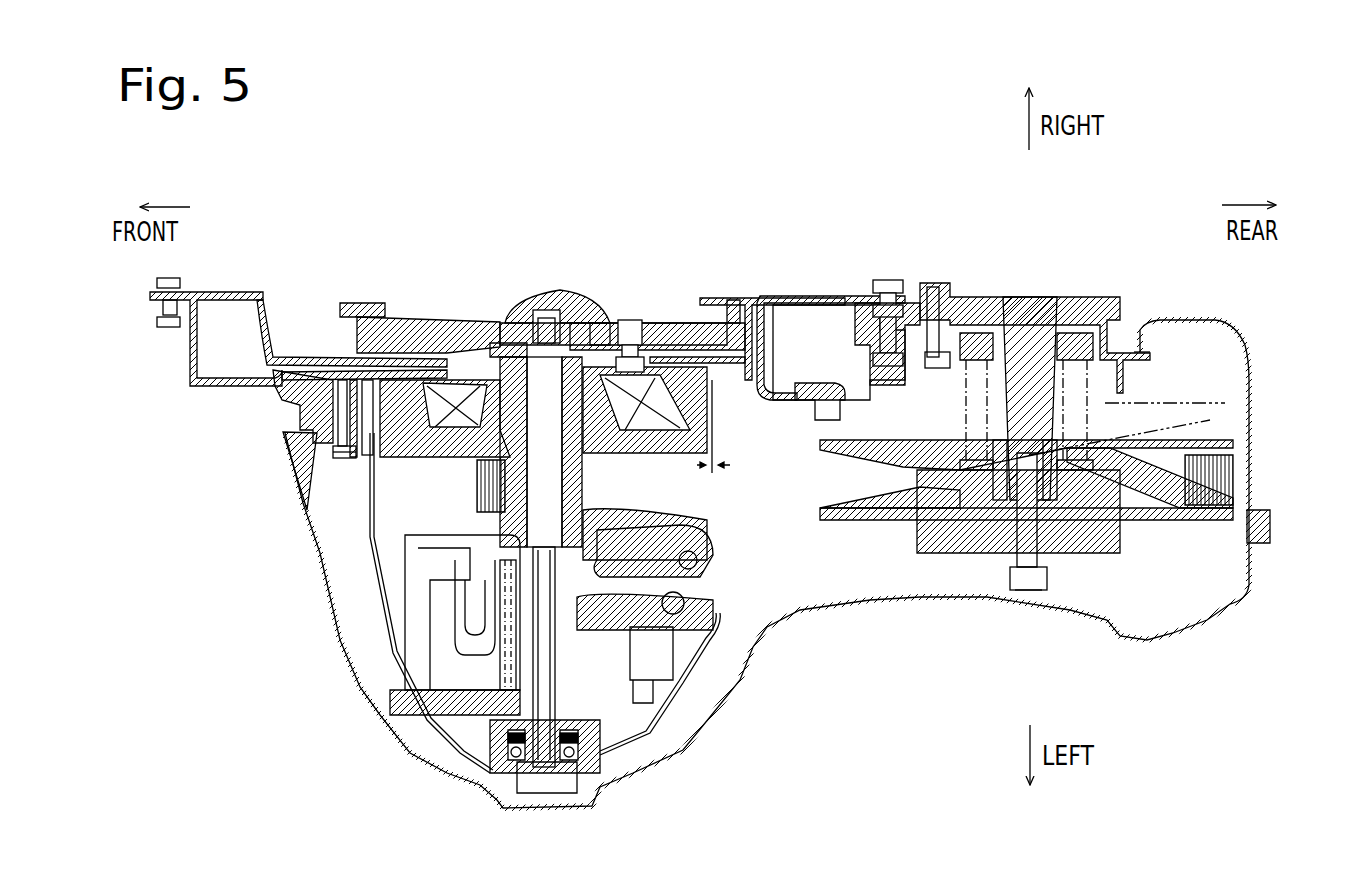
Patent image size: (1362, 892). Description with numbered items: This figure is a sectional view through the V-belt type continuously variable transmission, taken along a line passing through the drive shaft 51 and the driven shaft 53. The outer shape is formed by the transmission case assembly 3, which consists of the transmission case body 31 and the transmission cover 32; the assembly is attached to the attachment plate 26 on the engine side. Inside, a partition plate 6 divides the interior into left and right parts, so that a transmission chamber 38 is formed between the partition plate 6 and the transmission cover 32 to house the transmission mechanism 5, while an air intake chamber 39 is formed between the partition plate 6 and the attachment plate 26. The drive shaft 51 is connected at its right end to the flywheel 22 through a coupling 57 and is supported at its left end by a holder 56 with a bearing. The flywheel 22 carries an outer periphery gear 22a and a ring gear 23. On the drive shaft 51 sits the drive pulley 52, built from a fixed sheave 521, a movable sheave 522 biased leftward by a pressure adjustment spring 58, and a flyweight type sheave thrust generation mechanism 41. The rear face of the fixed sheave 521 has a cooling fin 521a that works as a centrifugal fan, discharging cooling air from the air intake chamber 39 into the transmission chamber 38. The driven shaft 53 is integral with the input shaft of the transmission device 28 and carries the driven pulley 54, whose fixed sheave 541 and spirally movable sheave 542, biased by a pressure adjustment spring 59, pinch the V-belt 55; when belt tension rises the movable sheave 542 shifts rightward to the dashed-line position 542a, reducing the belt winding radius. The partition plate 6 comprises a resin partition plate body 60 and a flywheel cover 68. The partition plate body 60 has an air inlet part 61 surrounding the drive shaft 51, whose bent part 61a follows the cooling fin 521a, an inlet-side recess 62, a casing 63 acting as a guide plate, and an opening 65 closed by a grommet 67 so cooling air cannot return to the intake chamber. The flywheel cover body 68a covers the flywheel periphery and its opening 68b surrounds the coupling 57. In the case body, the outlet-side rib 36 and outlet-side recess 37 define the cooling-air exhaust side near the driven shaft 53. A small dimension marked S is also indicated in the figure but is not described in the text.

The transmission case assembly 3 is at (1075, 476).
The transmission mechanism 5 is at (762, 575).
The partition plate 6 is at (752, 365).
The flywheel 22 is at (655, 325).
The outer periphery gear 22a is at (380, 300).
The ring gear 23 is at (362, 306).
The attachment plate 26 is at (235, 292).
The transmission device 28 is at (1105, 297).
The transmission case body 31 is at (1243, 407).
The transmission cover 32 is at (1265, 520).
The outlet-side rib 36 is at (1143, 340).
The outlet-side recess 37 is at (1180, 322).
The transmission chamber 38 is at (684, 513).
The air intake chamber 39 is at (773, 359).
The sheave thrust generation mechanism 41 is at (448, 612).
The drive shaft 51 is at (500, 722).
The drive pulley 52 is at (232, 547).
The fixed sheave 521 is at (395, 435).
The cooling fin 521a is at (660, 410).
The movable sheave 522 is at (385, 545).
The driven shaft 53 is at (990, 567).
The driven pulley 54 is at (1238, 567).
The fixed sheave 541 is at (1170, 520).
The movable sheave 542 is at (1190, 450).
The position of movable sheave 542a is at (1170, 400).
The V-belt 55 is at (1207, 420).
The holder 56 is at (520, 772).
The coupling 57 is at (540, 305).
The pressure adjustment spring 58 is at (508, 650).
The pressure adjustment spring 59 is at (975, 403).
The partition plate body 60 is at (298, 400).
The air inlet part 61 is at (628, 330).
The bent part 61a is at (665, 358).
The inlet-side recess 62 is at (785, 300).
The casing 63 is at (748, 335).
The opening 65 is at (882, 310).
The grommet 67 is at (830, 402).
The flywheel cover 68 is at (272, 330).
The flywheel cover body 68a is at (265, 345).
The opening 68b is at (462, 330).
The gap S is at (723, 456).